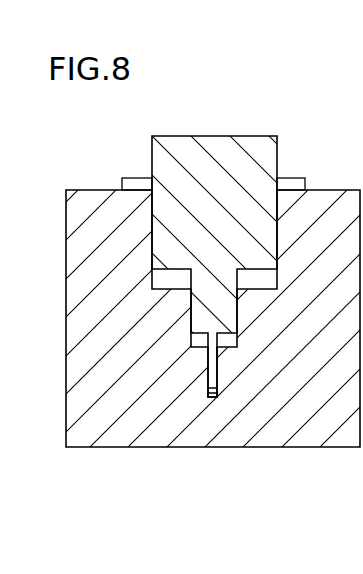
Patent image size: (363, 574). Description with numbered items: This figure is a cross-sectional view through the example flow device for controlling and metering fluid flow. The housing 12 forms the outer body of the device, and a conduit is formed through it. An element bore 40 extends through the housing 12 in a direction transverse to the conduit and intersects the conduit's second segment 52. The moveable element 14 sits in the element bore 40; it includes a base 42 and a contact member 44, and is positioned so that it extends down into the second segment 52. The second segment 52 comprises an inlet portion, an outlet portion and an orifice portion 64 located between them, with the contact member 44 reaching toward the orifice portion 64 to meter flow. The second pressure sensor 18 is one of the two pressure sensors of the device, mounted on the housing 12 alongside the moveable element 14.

The housing 12 is at (330, 181).
The moveable element 14 is at (217, 135).
The second pressure sensor 18 is at (137, 177).
The element bore 40 is at (152, 279).
The base 42 is at (260, 240).
The contact member 44 is at (215, 367).
The second segment 52 is at (200, 401).
The orifice portion 64 is at (214, 397).